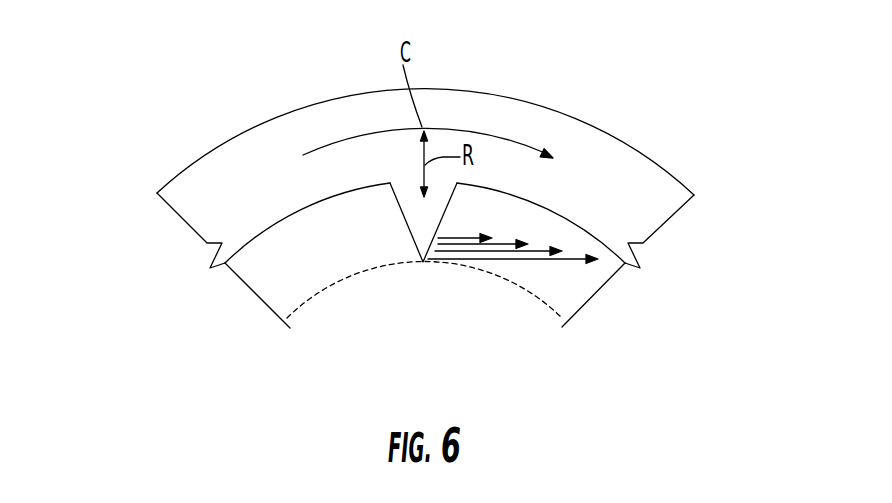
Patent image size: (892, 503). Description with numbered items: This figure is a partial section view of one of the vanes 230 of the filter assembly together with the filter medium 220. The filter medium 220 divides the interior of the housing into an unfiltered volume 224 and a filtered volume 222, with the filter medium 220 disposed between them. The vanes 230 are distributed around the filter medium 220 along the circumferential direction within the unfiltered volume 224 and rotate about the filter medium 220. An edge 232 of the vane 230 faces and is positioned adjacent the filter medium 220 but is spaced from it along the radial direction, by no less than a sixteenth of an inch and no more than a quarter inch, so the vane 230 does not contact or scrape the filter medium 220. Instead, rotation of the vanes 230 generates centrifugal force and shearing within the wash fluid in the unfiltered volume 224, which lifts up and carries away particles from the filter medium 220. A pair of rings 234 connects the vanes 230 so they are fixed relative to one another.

The filter medium 220 is at (534, 296).
The unfiltered volume 222 is at (405, 343).
The unfiltered volume 224 is at (266, 276).
The vane 230 is at (413, 207).
The edge 232 is at (419, 268).
The ring 234 is at (640, 185).